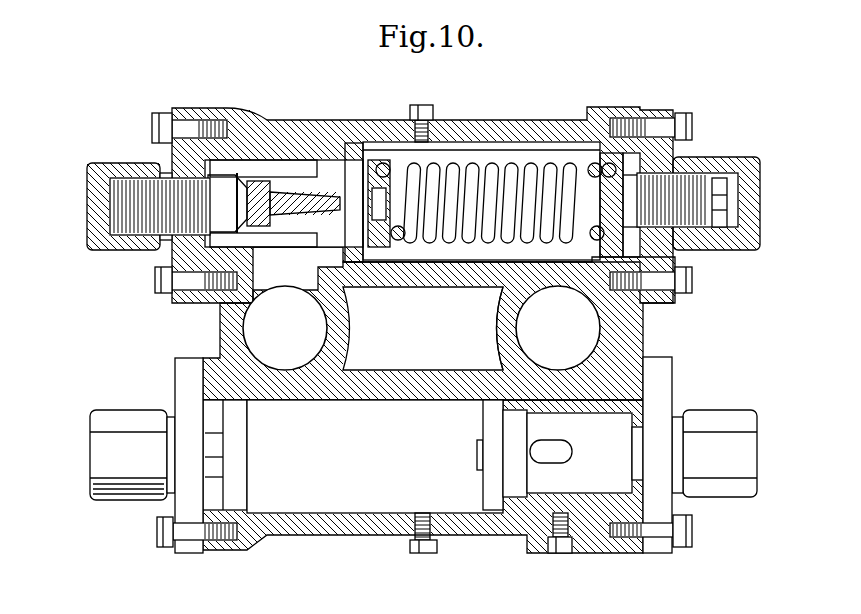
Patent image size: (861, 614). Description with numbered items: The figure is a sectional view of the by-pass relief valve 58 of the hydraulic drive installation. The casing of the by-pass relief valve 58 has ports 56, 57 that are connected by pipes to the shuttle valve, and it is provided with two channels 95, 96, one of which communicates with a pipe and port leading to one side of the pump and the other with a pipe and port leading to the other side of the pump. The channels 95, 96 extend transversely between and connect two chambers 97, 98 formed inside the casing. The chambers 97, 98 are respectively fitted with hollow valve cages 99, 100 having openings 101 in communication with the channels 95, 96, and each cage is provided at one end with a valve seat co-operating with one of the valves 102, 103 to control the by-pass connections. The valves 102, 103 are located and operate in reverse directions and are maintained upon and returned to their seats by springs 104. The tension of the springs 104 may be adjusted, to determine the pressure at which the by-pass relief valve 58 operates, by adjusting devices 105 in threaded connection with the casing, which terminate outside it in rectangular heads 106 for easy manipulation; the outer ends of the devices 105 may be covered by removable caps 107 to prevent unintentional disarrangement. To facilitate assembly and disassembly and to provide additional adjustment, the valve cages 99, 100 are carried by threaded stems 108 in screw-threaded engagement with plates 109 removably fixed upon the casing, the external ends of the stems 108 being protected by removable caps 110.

The port 56 is at (285, 328).
The port 57 is at (558, 328).
The by-pass relief valve 58 is at (343, 537).
The channel 95 is at (352, 350).
The channel 96 is at (496, 342).
The chamber 97 is at (293, 503).
The chamber 98 is at (518, 148).
The hollow valve cage 99 is at (585, 453).
The hollow valve cage 100 is at (256, 248).
The openings 101 is at (281, 243).
The valve 102 is at (492, 433).
The valve 103 is at (357, 150).
The spring 104 is at (468, 163).
The adjusting device 105 is at (670, 185).
The rectangular head 106 is at (718, 193).
The removable cap 107 is at (757, 247).
The threaded stem 108 is at (140, 178).
The plate 109 is at (185, 110).
The removable cap 110 is at (92, 205).